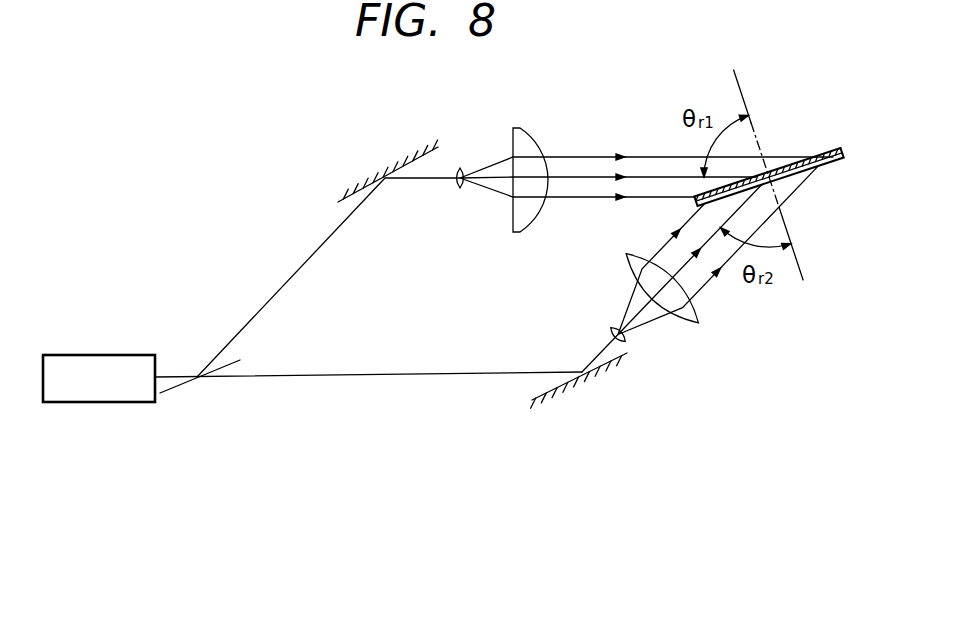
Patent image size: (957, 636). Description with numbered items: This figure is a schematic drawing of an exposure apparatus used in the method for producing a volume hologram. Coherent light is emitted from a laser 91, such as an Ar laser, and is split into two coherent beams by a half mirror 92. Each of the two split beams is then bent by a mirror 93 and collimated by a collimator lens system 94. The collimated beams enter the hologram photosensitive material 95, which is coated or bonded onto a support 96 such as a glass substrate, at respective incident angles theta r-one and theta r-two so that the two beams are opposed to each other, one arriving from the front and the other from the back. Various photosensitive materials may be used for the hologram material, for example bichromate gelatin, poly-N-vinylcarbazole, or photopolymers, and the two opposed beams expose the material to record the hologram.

The laser 91 is at (119, 355).
The half mirror 92 is at (196, 385).
The mirror 93 is at (383, 163).
The collimator lens system 94 is at (545, 124).
The hologram photosensitive material 95 is at (839, 149).
The support 96 is at (836, 166).